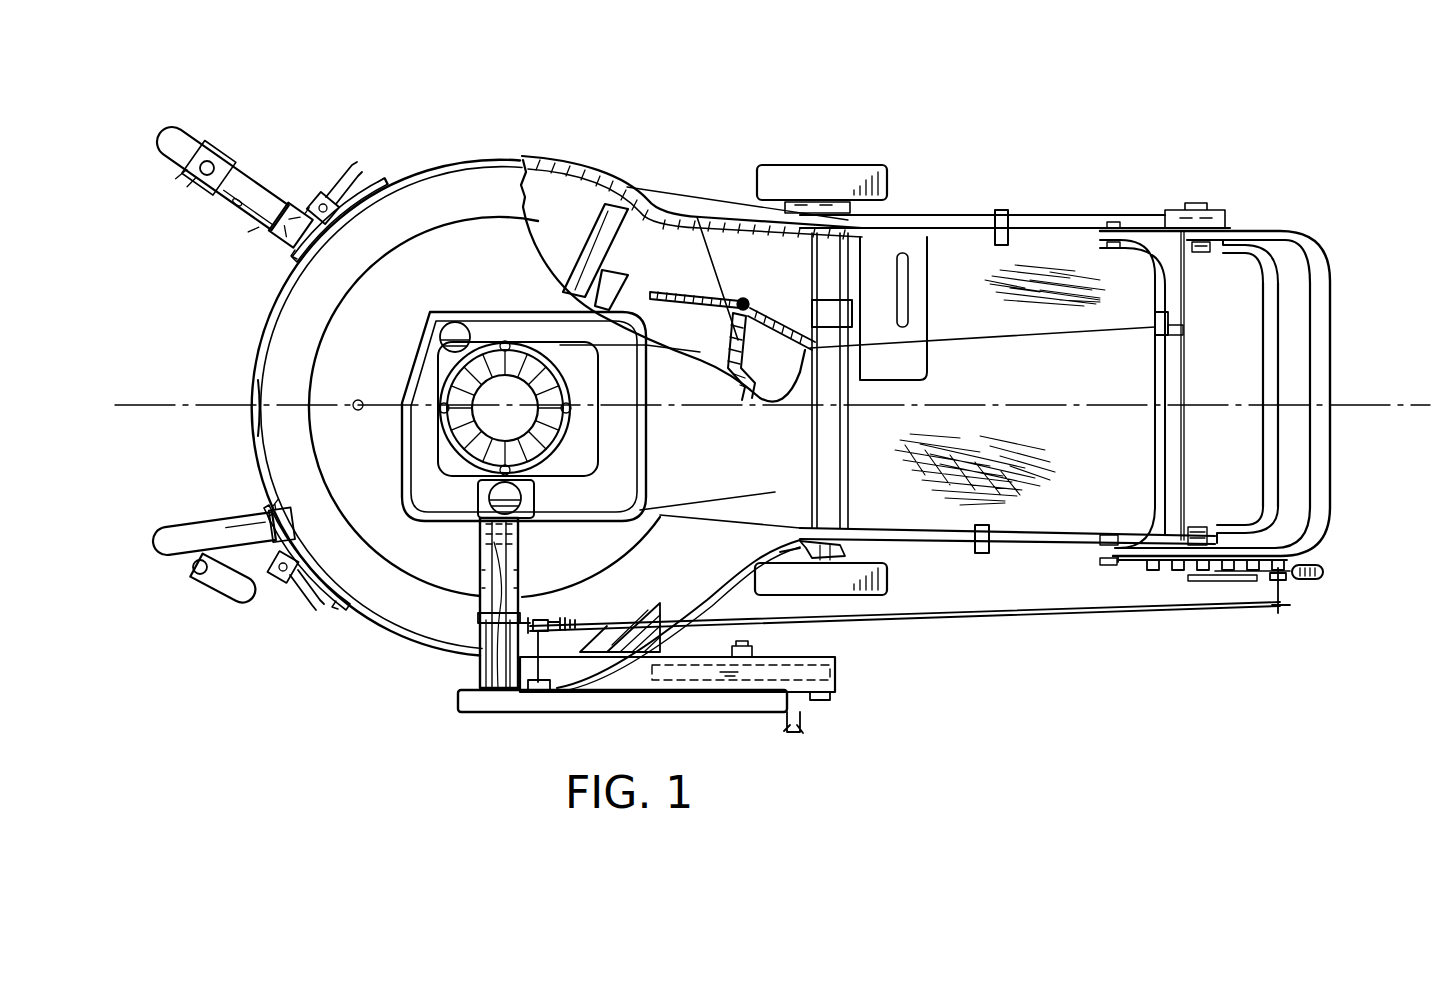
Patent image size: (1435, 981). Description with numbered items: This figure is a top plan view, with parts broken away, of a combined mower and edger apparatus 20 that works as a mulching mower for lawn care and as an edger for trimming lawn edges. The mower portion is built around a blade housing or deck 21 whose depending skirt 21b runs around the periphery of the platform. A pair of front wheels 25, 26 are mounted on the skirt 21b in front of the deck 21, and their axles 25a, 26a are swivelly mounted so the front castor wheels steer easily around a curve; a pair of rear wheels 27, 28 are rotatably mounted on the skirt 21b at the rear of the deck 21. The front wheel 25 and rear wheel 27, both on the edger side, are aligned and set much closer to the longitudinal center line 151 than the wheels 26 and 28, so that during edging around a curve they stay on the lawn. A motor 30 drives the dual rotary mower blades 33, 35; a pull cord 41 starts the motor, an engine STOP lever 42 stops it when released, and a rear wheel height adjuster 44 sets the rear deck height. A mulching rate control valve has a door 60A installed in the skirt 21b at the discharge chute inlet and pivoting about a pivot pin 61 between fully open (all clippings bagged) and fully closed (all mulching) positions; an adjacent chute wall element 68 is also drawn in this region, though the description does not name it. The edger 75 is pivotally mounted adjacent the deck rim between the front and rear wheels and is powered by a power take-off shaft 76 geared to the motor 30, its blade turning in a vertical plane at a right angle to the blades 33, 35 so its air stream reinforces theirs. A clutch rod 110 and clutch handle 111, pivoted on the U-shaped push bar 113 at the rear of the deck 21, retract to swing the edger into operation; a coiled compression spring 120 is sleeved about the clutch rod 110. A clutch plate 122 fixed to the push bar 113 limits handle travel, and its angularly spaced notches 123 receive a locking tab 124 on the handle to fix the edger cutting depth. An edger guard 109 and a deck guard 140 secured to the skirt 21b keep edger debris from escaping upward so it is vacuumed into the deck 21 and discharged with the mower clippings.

The combined mower and edger apparatus 20 is at (563, 124).
The blade housing or deck 21 is at (453, 184).
The skirt 21b is at (258, 350).
The front wheel 25 is at (152, 546).
The axle 25a is at (192, 580).
The front wheel 26 is at (180, 164).
The axle 26a is at (214, 158).
The rear wheel 27 is at (890, 581).
The rear wheel 28 is at (850, 170).
The motor 30 is at (408, 354).
The mower blade 33 is at (604, 215).
The mower blade 35 is at (614, 285).
The pull cord 41 is at (955, 345).
The engine STOP lever 42 is at (1262, 378).
The rear wheel height adjuster 44 is at (842, 554).
The door 60A is at (676, 283).
The pivot pin 61 is at (750, 301).
The chute wall 68 is at (735, 352).
The edger 75 is at (850, 705).
The power take-off shaft 76 is at (478, 650).
The edger guard 109 is at (838, 661).
The clutch rod 110 is at (1005, 613).
The clutch handle 111 is at (1325, 571).
The U-shaped push bar 113 is at (1343, 292).
The coiled compression spring 120 is at (520, 627).
The clutch plate 122 is at (1158, 570).
The notches 123 is at (1170, 570).
The locking tab 124 is at (1257, 574).
The deck guard 140 is at (680, 620).
The longitudinal center line 151 is at (185, 406).